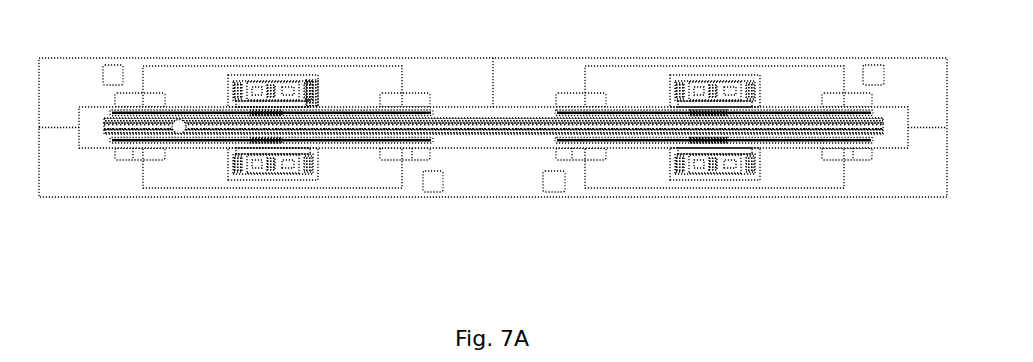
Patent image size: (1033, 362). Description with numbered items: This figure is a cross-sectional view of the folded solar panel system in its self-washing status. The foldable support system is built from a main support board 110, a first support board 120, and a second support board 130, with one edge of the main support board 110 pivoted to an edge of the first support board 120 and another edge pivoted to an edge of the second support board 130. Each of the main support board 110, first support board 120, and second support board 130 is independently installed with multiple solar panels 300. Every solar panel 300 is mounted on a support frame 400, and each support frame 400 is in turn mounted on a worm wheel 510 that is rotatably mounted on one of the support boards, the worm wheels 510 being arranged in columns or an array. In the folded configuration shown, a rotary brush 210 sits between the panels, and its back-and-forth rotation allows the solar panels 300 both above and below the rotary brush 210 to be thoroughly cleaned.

The main support board 110 is at (493, 190).
The first support board 120 is at (418, 69).
The second support board 130 is at (550, 70).
The rotary brush 210 is at (180, 132).
The solar panel 300 is at (343, 113).
The support frame 400 is at (307, 103).
The worm wheel 510 is at (276, 78).